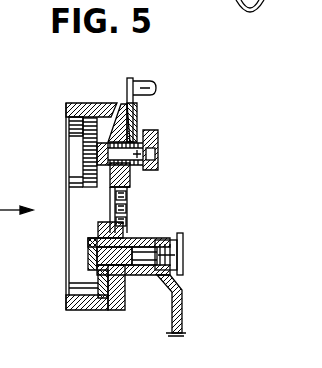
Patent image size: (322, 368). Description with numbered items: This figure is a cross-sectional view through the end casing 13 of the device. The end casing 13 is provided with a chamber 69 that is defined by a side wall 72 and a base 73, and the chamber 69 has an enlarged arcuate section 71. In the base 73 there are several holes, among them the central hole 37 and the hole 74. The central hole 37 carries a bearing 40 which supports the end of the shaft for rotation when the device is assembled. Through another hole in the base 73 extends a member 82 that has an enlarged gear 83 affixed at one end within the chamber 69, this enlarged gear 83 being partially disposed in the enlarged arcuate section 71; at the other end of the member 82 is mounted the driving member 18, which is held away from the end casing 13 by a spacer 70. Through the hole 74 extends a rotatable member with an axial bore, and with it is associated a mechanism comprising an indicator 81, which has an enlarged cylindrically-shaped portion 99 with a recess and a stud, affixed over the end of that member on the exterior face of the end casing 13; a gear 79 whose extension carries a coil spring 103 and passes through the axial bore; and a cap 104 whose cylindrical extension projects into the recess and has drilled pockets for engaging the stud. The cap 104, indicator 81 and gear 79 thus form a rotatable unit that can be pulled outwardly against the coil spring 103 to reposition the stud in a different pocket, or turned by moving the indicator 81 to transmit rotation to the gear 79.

The end casing 13 is at (75, 98).
The driving member 18 is at (182, 328).
The central hole 37 is at (112, 200).
The bearing 40 is at (130, 197).
The chamber 69 is at (78, 178).
The spacer 70 is at (140, 278).
The enlarged arcuate section 71 is at (88, 292).
The side wall 72 is at (66, 107).
The base 73 is at (115, 302).
The hole 74 is at (116, 104).
The gear 79 is at (81, 142).
The indicator 81 is at (153, 103).
The member 82 is at (183, 253).
The enlarged gear 83 is at (96, 232).
The enlarged cylindrically-shaped portion 99 is at (160, 163).
The coil spring 103 is at (80, 158).
The cap 104 is at (155, 128).